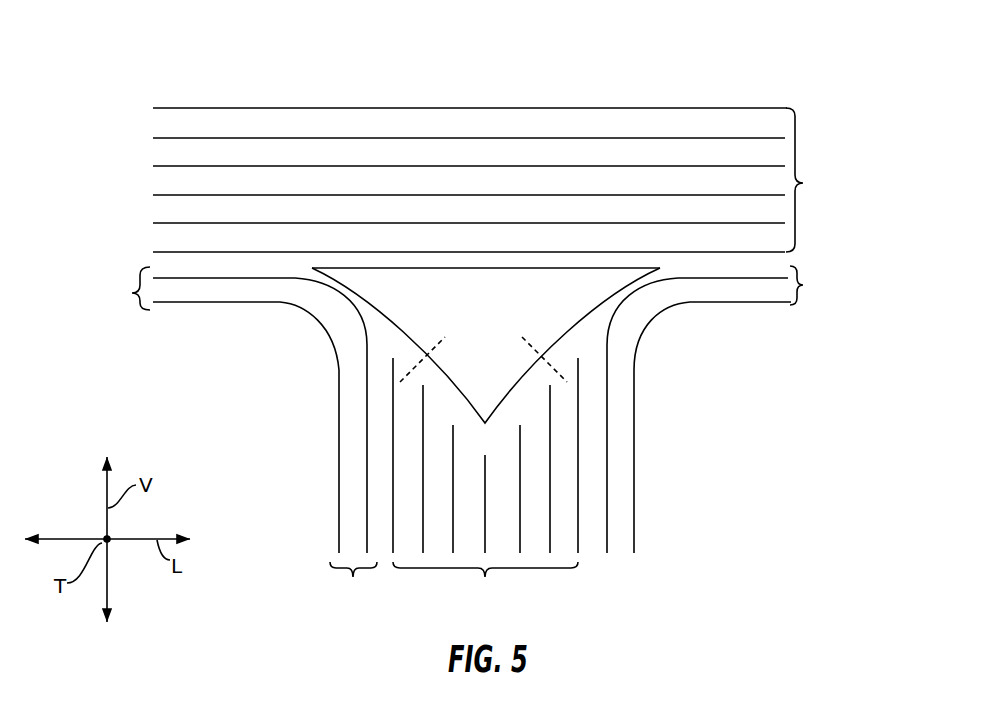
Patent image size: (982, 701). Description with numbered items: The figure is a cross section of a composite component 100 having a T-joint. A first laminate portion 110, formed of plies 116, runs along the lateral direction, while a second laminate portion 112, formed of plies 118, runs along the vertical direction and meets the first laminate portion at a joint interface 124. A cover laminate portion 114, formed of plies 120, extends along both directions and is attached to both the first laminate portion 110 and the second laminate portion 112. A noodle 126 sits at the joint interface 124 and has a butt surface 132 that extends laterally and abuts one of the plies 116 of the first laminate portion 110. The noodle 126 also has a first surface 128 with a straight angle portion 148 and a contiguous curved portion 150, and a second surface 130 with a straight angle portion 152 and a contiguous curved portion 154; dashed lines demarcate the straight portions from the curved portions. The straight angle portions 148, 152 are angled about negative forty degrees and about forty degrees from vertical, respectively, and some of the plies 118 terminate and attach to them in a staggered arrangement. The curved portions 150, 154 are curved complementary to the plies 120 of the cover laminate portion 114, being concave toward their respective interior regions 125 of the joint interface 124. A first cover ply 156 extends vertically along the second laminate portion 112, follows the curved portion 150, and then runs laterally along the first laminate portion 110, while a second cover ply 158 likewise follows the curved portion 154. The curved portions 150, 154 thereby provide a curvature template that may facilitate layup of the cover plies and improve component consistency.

The composite component 100 is at (158, 76).
The first laminate portion 110 is at (496, 180).
The second laminate portion 112 is at (486, 440).
The cover laminate portion 114 is at (467, 439).
The plies 116 is at (350, 106).
The plies 118 is at (582, 510).
The plies 120 is at (212, 320).
The joint interface 124 is at (669, 269).
The interior region 125 is at (295, 372).
The noodle 126 is at (557, 280).
The first surface 128 is at (390, 323).
The second surface 130 is at (558, 333).
The butt surface 132 is at (479, 266).
The straight angle portion 148 is at (448, 397).
The curved portion 150 is at (358, 297).
The straight angle portion 152 is at (520, 388).
The curved portion 154 is at (618, 287).
The first cover ply 156 is at (333, 287).
The second cover ply 158 is at (607, 490).